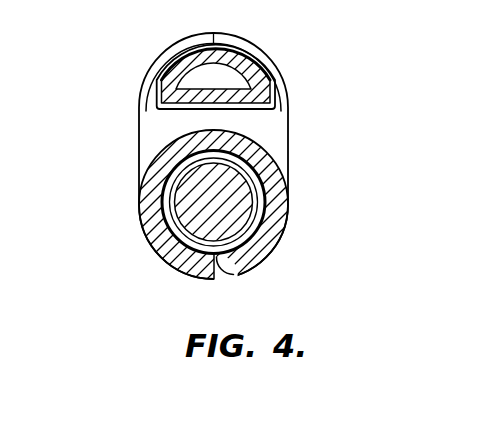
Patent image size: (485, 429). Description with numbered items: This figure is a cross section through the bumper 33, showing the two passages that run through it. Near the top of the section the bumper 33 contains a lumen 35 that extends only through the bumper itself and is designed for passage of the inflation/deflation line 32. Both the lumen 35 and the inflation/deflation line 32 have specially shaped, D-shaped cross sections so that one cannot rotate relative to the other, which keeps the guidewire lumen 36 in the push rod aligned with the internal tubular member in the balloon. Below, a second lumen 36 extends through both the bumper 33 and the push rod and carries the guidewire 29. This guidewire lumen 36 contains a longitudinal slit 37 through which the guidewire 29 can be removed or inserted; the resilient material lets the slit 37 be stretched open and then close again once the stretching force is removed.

The guidewire 29 is at (186, 209).
The inflation/deflation line 32 is at (172, 71).
The bumper 33 is at (288, 138).
The lumen 35 is at (262, 73).
The second lumen 36 is at (257, 209).
The longitudinal slit 37 is at (235, 278).